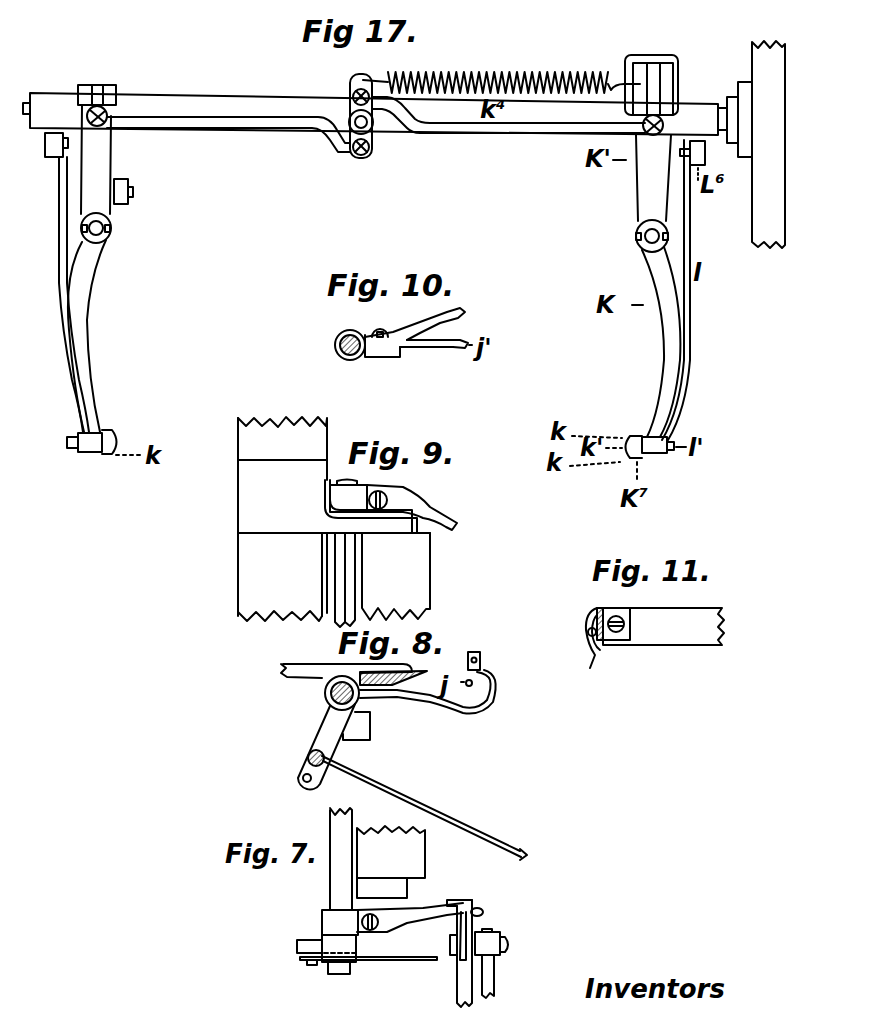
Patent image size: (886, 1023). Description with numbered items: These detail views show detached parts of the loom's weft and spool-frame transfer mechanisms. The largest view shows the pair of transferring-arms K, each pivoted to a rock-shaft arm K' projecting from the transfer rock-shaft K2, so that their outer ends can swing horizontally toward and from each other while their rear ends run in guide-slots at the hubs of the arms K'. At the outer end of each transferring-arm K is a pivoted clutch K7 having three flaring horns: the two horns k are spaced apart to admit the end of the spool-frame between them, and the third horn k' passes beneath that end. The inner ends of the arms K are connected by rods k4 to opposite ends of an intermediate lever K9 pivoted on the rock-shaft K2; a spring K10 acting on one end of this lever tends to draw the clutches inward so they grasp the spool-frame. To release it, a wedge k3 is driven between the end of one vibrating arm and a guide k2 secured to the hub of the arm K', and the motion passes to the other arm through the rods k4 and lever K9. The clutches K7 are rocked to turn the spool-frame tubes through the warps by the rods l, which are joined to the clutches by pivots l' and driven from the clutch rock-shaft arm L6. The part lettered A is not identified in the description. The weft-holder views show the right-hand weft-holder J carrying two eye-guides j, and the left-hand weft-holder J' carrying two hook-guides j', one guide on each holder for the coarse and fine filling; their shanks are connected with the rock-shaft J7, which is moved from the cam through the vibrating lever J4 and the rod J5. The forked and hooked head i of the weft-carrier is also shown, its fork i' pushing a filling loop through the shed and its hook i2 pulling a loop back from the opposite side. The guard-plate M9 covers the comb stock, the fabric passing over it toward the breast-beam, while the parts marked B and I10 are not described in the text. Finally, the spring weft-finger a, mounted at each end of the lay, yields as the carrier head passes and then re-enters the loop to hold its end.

In FIG. 17, the rock-shaft K2 is at (370, 101).
In FIG. 17, the rods k4 is at (376, 122).
In FIG. 17, the spring K10 is at (501, 67).
In FIG. 17, the guide k2 is at (651, 71).
In FIG. 17, the wedge k3 is at (678, 75).
In FIG. 17, the frame A is at (751, 144).
In FIG. 17, the rock-shaft arm K' is at (370, 144).
In FIG. 17, the intermediate lever K9 is at (361, 159).
In FIG. 17, the arm of clutch rock-shaft L6 is at (40, 157).
In FIG. 17, the rods l is at (365, 290).
In FIG. 17, the transferring-arm K is at (374, 271).
In FIG. 17, the pivot l' is at (360, 437).
In FIG. 17, the horn k is at (372, 434).
In FIG. 17, the third horn k' is at (161, 440).
In FIG. 17, the clutch K7 is at (104, 458).
In FIG. 10, the rock-shaft J7 is at (325, 344).
In FIG. 9, the rock-shaft J7 is at (340, 580).
In FIG. 8, the rock-shaft J7 is at (325, 690).
In FIG. 7, the rock-shaft J7 is at (331, 859).
In FIG. 10, the weft-holder J' is at (416, 332).
In FIG. 9, the weft-holder J' is at (393, 505).
In FIG. 10, the hook-guide j' is at (479, 317).
In FIG. 9, the bed B is at (334, 519).
In FIG. 9, the guard-plate M9 is at (396, 576).
In FIG. 7, the guard-plate M9 is at (391, 862).
In FIG. 8, the vibrating lever J4 is at (326, 746).
In FIG. 7, the vibrating lever J4 is at (288, 947).
In FIG. 8, the rod J5 is at (424, 808).
In FIG. 7, the rod J5 is at (367, 966).
In FIG. 8, the weft-holder J is at (436, 686).
In FIG. 7, the weft-holder J is at (502, 946).
In FIG. 8, the eye-guide j is at (490, 649).
In FIG. 7, the block I10 is at (428, 943).
In FIG. 7, the hook i2 is at (459, 889).
In FIG. 7, the weft-carrier head i is at (461, 953).
In FIG. 7, the fork i' is at (514, 928).
In FIG. 11, the spring weft-finger a is at (655, 639).